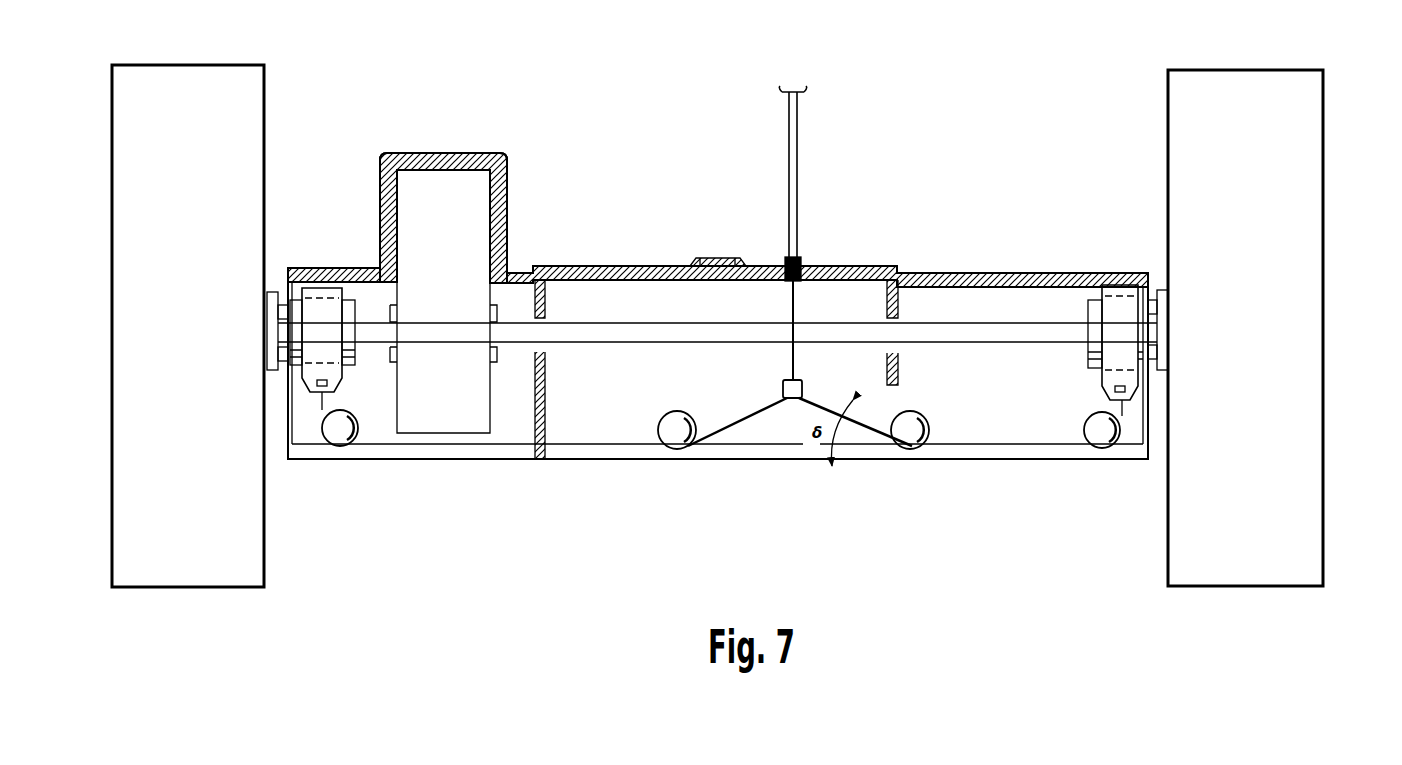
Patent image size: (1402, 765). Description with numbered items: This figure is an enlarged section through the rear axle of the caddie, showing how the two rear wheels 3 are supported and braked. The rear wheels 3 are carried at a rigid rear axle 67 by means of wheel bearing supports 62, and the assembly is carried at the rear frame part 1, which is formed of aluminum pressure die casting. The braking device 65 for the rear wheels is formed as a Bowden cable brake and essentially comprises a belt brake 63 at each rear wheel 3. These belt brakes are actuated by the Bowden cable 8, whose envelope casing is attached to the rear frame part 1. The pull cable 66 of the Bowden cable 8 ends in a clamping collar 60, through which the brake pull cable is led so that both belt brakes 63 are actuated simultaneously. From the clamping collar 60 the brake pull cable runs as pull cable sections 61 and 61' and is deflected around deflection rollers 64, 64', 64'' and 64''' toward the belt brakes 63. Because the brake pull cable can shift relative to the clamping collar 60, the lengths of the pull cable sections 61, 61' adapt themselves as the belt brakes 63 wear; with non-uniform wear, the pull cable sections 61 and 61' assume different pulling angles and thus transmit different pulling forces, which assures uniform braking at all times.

The rear frame part 1 is at (512, 152).
The rear wheel 3 is at (1301, 192).
The Bowden cable 8 is at (800, 118).
The clamping collar 60 is at (793, 400).
The pull cable section 61 is at (886, 403).
The pull cable section 61' is at (699, 403).
The wheel bearing support 62 is at (1163, 295).
The belt brake 63 is at (318, 300).
The deflection roller 64 is at (910, 476).
The deflection roller 64' is at (675, 476).
The deflection roller 64'' is at (341, 476).
The deflection roller 64''' is at (1099, 477).
The braking device 65 is at (838, 362).
The pull cable 66 is at (795, 300).
The rear axle 67 is at (583, 332).